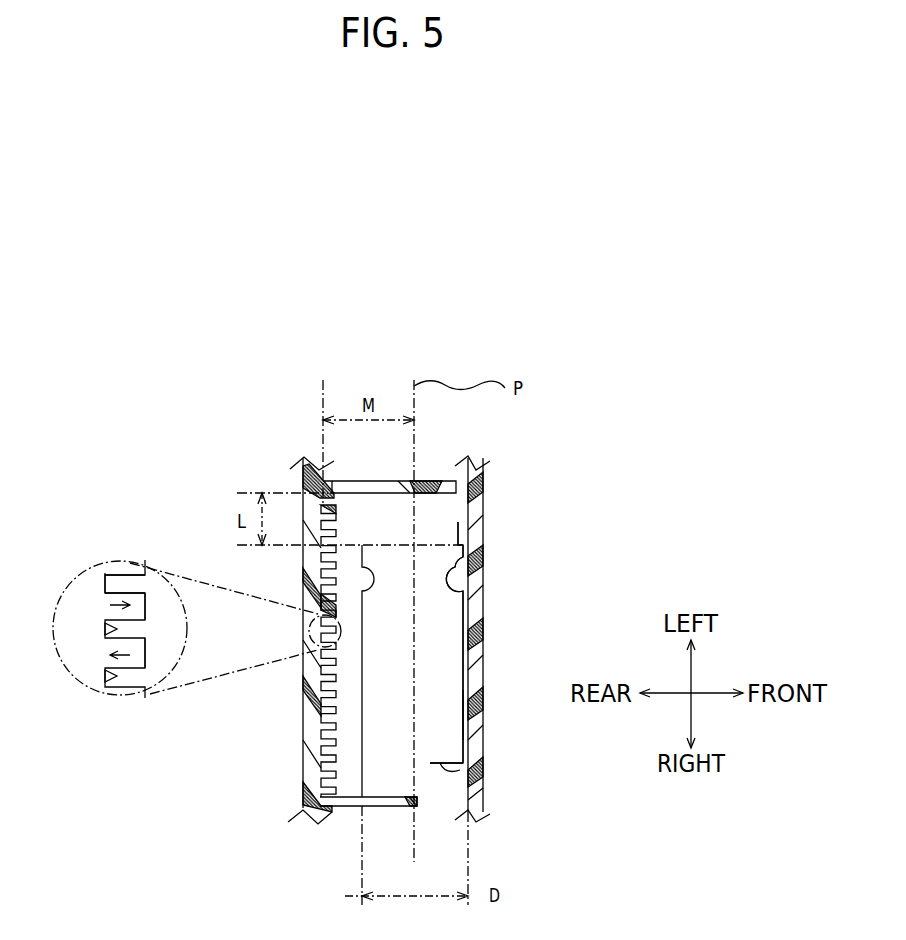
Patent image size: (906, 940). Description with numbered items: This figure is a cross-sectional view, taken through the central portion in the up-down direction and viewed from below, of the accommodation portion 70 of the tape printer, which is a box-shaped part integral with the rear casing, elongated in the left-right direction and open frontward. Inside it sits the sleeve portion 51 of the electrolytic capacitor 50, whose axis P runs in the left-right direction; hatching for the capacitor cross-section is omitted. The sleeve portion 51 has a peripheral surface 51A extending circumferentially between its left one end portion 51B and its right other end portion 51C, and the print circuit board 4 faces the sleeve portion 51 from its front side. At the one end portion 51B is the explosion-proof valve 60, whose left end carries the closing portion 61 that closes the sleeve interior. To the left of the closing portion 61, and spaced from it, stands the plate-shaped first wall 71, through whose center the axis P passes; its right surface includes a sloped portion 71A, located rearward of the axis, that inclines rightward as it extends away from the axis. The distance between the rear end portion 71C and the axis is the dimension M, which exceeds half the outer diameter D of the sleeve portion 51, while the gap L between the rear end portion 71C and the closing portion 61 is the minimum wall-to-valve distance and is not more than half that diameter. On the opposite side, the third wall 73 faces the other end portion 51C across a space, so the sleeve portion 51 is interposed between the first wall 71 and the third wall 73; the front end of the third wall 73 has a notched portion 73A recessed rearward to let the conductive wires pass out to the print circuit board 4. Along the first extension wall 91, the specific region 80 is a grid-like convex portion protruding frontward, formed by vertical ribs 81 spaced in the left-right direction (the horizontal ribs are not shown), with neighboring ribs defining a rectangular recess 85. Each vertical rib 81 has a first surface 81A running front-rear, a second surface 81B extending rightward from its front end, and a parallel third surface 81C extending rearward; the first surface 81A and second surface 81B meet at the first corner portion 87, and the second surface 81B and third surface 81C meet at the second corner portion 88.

The print circuit board 4 is at (478, 530).
The electrolytic capacitor 50 is at (476, 498).
The sleeve portion 51 is at (484, 660).
The peripheral surface 51A is at (420, 715).
The one end portion 51B is at (448, 598).
The other end portion 51C is at (470, 760).
The explosion-proof valve 60 is at (438, 558).
The closing portion 61 is at (437, 538).
The accommodation portion 70 is at (391, 668).
The first wall 71 is at (431, 465).
The sloped portion 71A is at (380, 490).
The rear end portion 71C is at (330, 481).
The third wall 73 is at (340, 808).
The notched portion 73A is at (420, 810).
The specific region 80 is at (320, 778).
The vertical rib 81 is at (322, 768).
The first surface 81A is at (110, 575).
The second surface 81B is at (148, 628).
The third surface 81C is at (112, 598).
The recess 85 is at (104, 628).
The first corner portion 87 is at (148, 606).
The second corner portion 88 is at (148, 660).
The first extension wall 91 is at (312, 735).